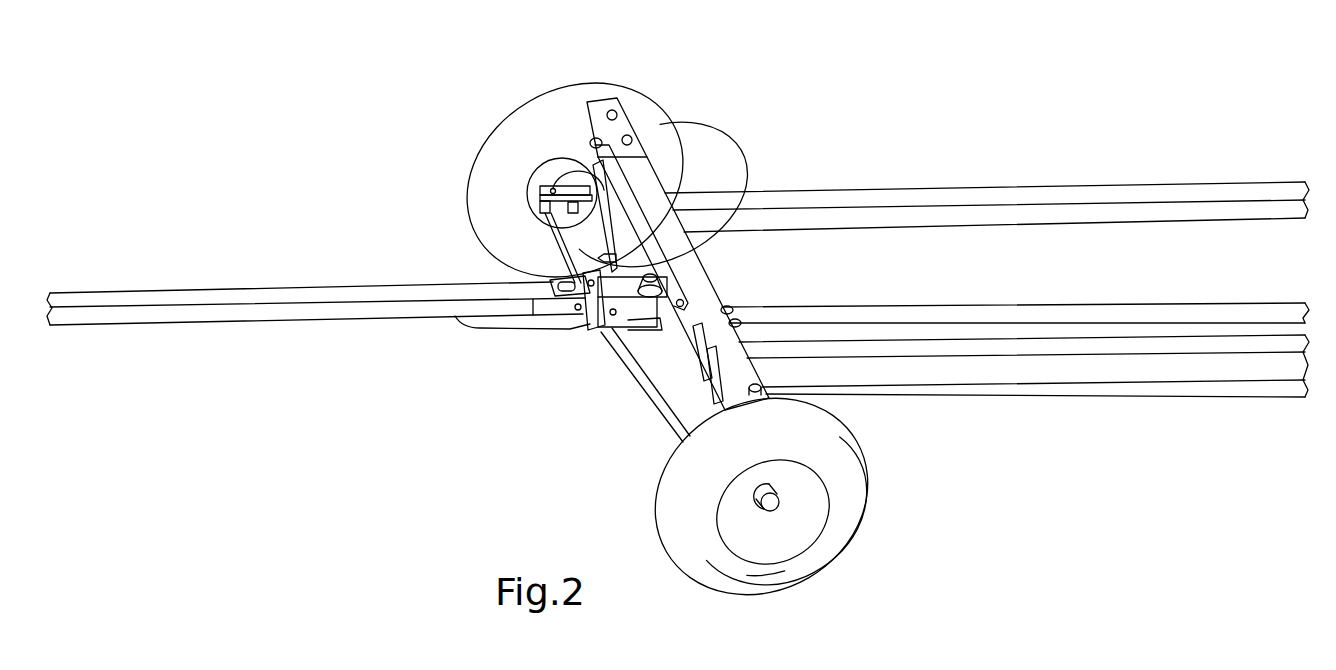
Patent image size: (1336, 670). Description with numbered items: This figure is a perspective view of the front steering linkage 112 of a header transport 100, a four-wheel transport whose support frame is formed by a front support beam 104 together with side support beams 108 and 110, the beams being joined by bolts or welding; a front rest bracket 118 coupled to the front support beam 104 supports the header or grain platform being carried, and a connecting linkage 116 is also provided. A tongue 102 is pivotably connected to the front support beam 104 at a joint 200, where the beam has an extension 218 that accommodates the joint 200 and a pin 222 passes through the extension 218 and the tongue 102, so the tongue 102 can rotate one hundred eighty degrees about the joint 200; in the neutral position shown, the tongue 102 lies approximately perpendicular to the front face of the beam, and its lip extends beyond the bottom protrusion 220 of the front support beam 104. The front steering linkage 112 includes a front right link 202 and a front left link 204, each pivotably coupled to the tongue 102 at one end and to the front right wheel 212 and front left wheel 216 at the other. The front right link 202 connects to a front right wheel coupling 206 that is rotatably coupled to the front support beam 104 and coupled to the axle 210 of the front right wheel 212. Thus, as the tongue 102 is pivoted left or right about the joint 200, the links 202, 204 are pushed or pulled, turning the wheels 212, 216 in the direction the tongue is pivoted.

The header transport 100 is at (792, 108).
The tongue 102 is at (230, 293).
The front support beam 104 is at (742, 363).
The side support beam 108 is at (1212, 183).
The side support beam 110 is at (1255, 367).
The front steering linkage 112 is at (638, 411).
The connecting linkage 116 is at (946, 298).
The front rest bracket 118 is at (650, 182).
The joint 200 is at (622, 322).
The front right link 202 is at (545, 238).
The front left link 204 is at (662, 440).
The front right wheel coupling 206 is at (548, 190).
The axle 210 is at (545, 206).
The front right wheel 212 is at (532, 103).
The front left wheel 216 is at (853, 507).
The extension 218 is at (660, 283).
The bottom protrusion 220 is at (657, 337).
The pin 222 is at (654, 262).